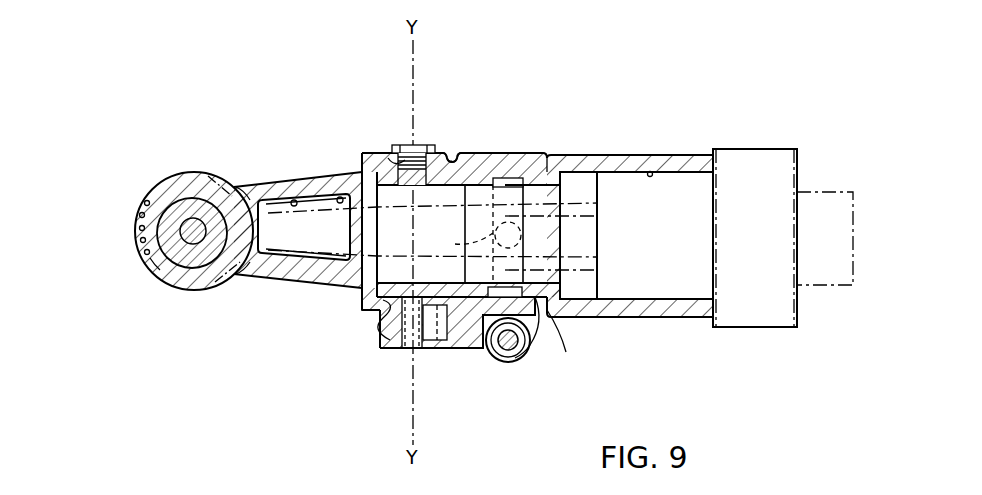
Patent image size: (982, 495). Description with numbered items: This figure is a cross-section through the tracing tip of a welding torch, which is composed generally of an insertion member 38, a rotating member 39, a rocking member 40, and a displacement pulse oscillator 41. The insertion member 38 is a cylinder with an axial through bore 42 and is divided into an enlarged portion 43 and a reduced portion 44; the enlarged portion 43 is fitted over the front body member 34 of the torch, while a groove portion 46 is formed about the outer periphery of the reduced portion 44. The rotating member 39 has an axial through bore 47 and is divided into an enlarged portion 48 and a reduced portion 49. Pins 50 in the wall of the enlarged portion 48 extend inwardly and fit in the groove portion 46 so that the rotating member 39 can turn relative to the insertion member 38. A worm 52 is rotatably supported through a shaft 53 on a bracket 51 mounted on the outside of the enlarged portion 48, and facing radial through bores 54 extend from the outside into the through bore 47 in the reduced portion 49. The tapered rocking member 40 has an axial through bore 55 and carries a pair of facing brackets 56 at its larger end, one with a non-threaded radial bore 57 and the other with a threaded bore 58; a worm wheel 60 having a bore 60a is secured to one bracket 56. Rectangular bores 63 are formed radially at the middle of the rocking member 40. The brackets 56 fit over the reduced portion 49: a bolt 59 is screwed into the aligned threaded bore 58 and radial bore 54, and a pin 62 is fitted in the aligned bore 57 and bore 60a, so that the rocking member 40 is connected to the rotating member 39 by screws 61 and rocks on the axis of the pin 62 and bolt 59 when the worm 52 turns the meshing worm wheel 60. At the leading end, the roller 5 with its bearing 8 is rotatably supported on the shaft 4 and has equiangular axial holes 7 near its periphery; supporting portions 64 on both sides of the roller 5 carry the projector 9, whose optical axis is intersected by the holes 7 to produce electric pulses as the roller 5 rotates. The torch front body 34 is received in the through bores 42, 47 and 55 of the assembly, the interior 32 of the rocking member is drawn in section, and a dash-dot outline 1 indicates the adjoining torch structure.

The vehicle body / mounting structure 1 is at (800, 178).
The shaft 4 is at (150, 258).
The roller 5 is at (166, 176).
The holes 7 is at (139, 226).
The bearing 8 is at (185, 199).
The projector 9 is at (244, 183).
The bore 32 is at (292, 266).
The front body member 34 is at (690, 186).
The insertion member 38 is at (657, 328).
The rotating member 39 is at (546, 154).
The rocking member 40 is at (303, 291).
The displacement pulse oscillator 41 is at (204, 168).
The axial through bore 42 is at (651, 171).
The enlarged portion 43 is at (606, 160).
The reduced portion 44 is at (505, 178).
The groove portion 46 is at (521, 183).
The axial through bore 47 is at (376, 306).
The enlarged portion 48 is at (470, 166).
The reduced portion 49 is at (400, 178).
The pins 50 is at (468, 234).
The bracket 51 is at (548, 342).
The worm 52 is at (514, 360).
The shaft 53 is at (538, 343).
The radial through bores 54 is at (378, 174).
The axial through bore 55 is at (340, 196).
The brackets 56 is at (451, 158).
The non-threaded radial bore 57 is at (390, 322).
The threaded bore 58 is at (404, 144).
The bolt 59 is at (428, 152).
The worm wheel 60 is at (476, 349).
The bore 60a is at (416, 350).
The screws 61 is at (445, 342).
The pin 62 is at (422, 350).
The rectangular bores 63 is at (294, 199).
The supporting portions 64 is at (218, 183).